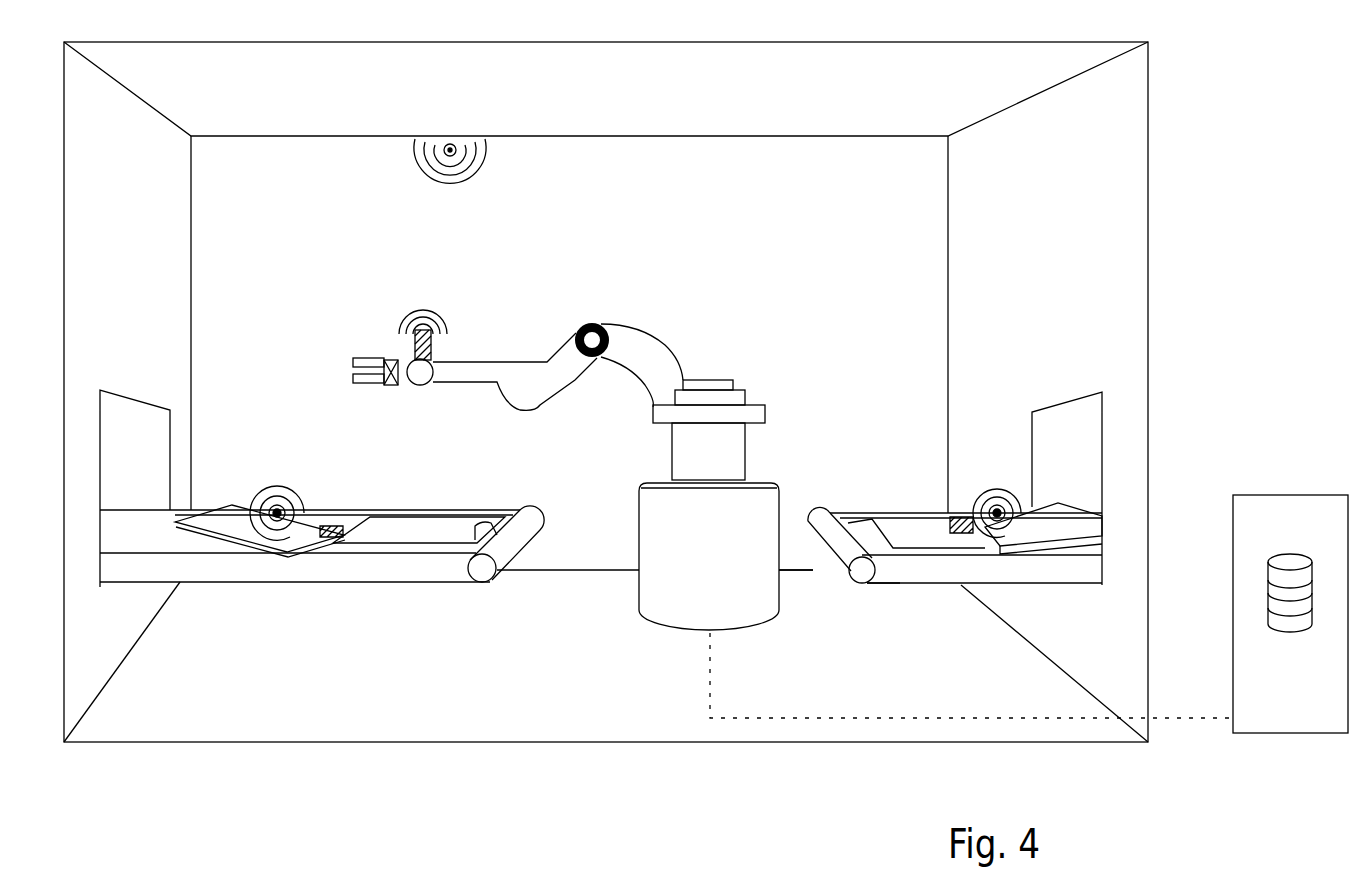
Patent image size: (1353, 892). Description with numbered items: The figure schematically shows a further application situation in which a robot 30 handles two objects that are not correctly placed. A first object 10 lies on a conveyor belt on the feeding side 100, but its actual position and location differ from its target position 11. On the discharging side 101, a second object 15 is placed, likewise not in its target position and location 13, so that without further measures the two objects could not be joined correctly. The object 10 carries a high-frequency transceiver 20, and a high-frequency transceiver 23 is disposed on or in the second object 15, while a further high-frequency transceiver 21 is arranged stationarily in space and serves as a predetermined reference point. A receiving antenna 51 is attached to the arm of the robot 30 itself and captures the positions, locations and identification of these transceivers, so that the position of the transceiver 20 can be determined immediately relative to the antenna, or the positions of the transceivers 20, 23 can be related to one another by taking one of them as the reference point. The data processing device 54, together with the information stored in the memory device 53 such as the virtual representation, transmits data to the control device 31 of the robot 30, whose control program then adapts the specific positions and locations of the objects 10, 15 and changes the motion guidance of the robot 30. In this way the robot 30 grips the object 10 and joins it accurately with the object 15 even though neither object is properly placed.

The feeding side 100 is at (285, 592).
The discharging side 101 is at (850, 595).
The object 10 is at (222, 505).
The target position 11 is at (428, 525).
The target position and location 13 is at (927, 542).
The object 15 is at (1030, 508).
The high-frequency transceiver 20 is at (288, 517).
The high-frequency transceiver 21 is at (463, 153).
The high-frequency transceiver 23 is at (980, 507).
The robot 30 is at (543, 340).
The control device 31 is at (680, 587).
The receiving antenna 51 is at (410, 328).
The memory device 53 is at (1270, 580).
The data processing device 54 is at (1255, 668).